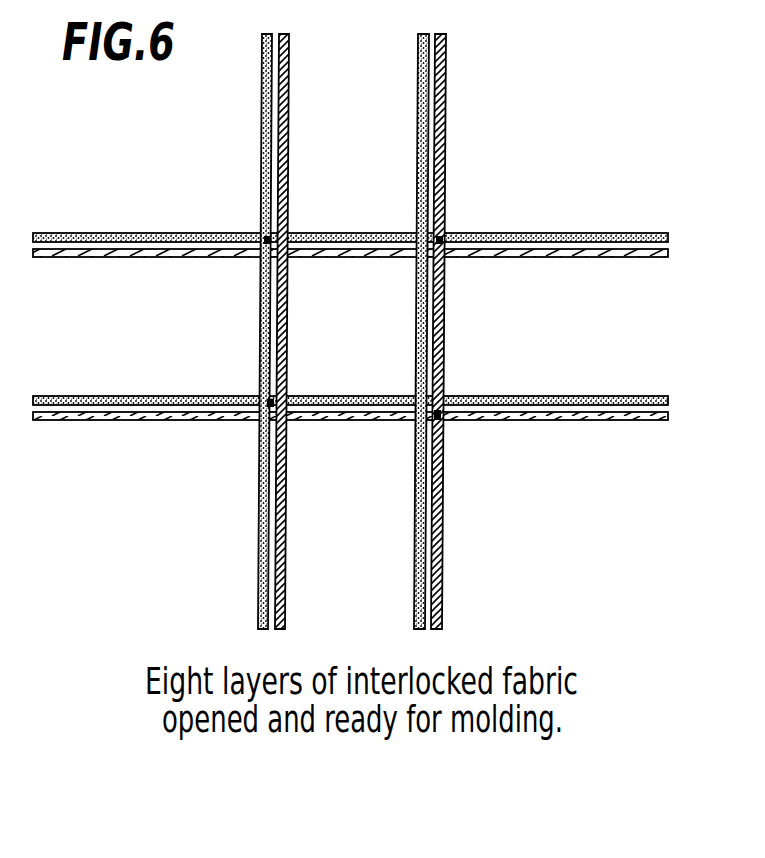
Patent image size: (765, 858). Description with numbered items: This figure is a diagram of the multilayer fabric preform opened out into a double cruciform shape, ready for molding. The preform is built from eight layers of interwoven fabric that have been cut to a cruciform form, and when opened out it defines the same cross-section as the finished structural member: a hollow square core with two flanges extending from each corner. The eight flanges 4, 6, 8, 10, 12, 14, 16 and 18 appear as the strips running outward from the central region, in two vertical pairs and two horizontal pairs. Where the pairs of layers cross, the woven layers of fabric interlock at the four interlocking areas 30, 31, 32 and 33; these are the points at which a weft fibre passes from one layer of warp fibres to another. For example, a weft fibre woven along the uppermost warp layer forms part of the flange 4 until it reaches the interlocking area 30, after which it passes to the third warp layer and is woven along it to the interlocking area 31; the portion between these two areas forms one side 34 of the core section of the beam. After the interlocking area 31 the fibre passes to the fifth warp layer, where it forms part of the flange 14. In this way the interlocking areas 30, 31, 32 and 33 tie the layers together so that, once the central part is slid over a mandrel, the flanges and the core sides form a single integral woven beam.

The flange 4 is at (272, 117).
The flange 6 is at (428, 117).
The flange 8 is at (583, 235).
The flange 10 is at (565, 397).
The flange 12 is at (428, 585).
The flange 14 is at (270, 585).
The flange 16 is at (142, 395).
The flange 18 is at (138, 233).
The interlocking area 30 is at (270, 243).
The interlocking area 31 is at (447, 235).
The interlocking area 32 is at (438, 427).
The interlocking area 33 is at (273, 403).
The side of the core section 34 is at (262, 308).